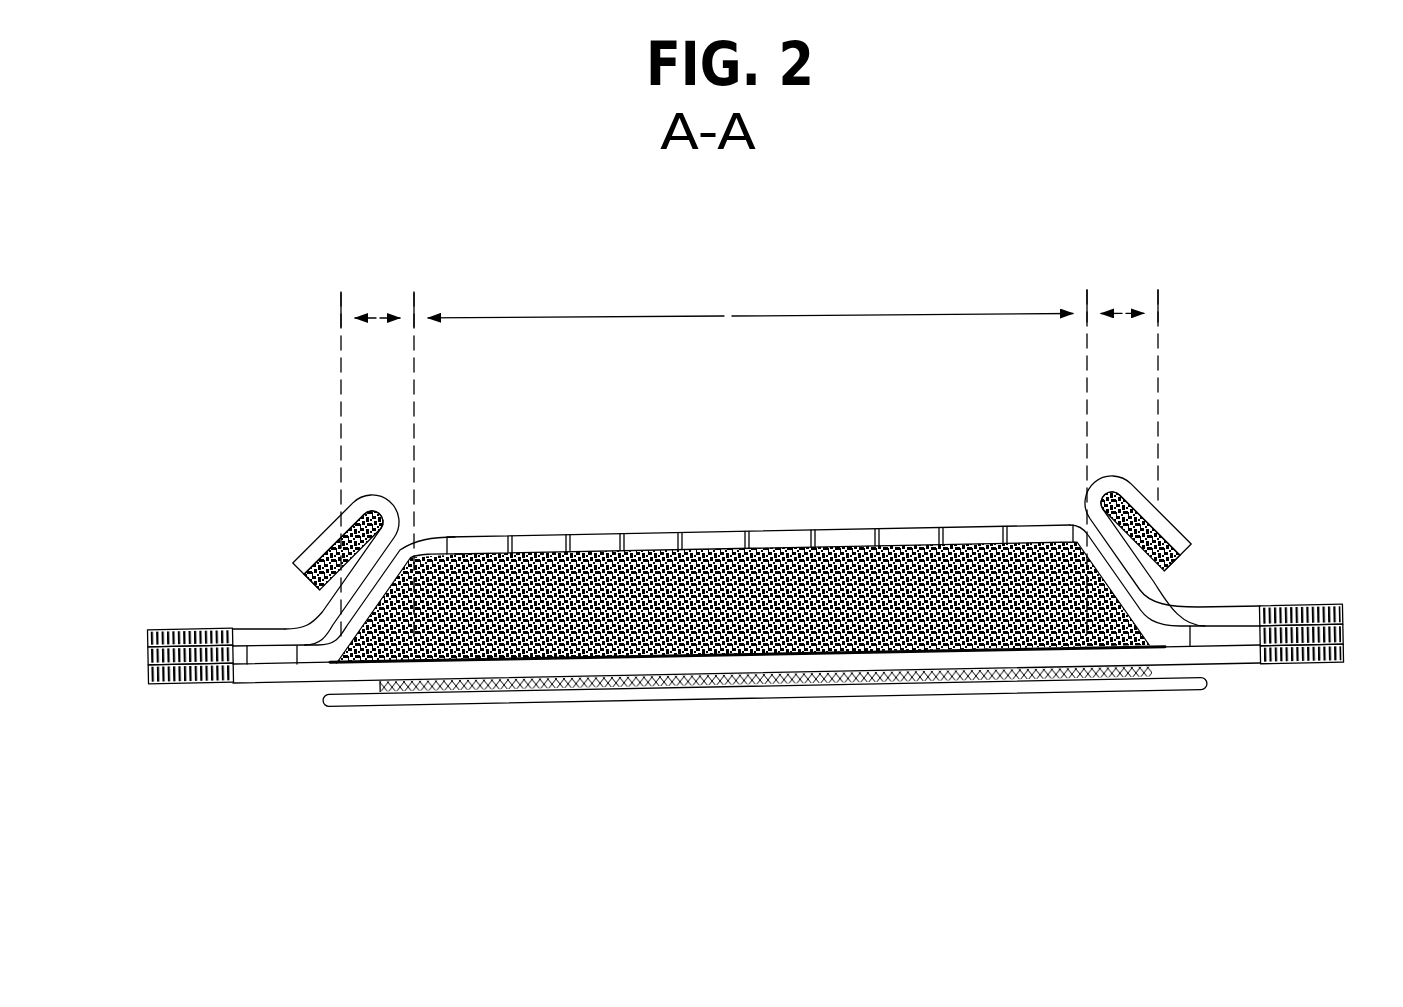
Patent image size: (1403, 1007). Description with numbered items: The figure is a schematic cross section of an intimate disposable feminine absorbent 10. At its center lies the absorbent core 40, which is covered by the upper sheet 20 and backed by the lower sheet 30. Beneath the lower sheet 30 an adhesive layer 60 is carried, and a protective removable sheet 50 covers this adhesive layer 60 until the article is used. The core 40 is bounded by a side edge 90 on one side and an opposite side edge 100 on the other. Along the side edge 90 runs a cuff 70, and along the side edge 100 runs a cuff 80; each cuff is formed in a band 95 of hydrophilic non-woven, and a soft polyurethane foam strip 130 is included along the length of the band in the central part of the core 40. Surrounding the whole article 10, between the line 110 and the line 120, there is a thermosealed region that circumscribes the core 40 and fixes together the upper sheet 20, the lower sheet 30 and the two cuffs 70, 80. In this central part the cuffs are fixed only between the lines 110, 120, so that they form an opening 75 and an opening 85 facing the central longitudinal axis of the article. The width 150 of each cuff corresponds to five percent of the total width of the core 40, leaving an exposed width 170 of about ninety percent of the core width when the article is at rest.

The intimate disposable feminine absorbent 10 is at (196, 286).
The upper sheet 20 is at (660, 535).
The lower sheet 30 is at (397, 712).
The absorbent core 40 is at (786, 590).
The protective removable sheet 50 is at (473, 689).
The adhesive layer 60 is at (585, 703).
The cuff 70 is at (378, 488).
The opening 75 is at (422, 530).
The cuff 80 is at (1120, 463).
The opening 85 is at (1082, 528).
The side edge 90 is at (318, 664).
The band of hydrophilic non-woven 95 is at (297, 628).
The side edge 100 is at (1160, 650).
The line 110 is at (240, 690).
The line 120 is at (152, 688).
The soft polyurethane foam strip 130 is at (340, 540).
The width of cuff 150 is at (377, 318).
The exposed width 170 is at (727, 316).